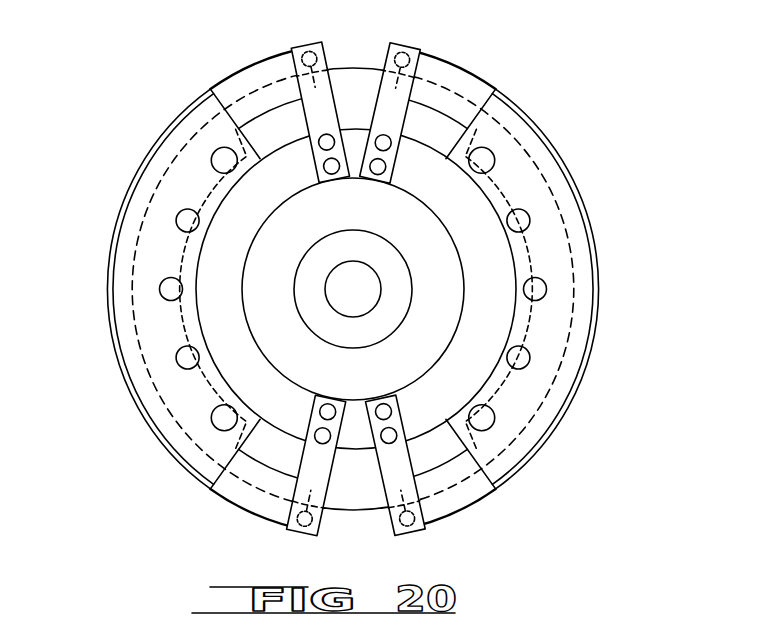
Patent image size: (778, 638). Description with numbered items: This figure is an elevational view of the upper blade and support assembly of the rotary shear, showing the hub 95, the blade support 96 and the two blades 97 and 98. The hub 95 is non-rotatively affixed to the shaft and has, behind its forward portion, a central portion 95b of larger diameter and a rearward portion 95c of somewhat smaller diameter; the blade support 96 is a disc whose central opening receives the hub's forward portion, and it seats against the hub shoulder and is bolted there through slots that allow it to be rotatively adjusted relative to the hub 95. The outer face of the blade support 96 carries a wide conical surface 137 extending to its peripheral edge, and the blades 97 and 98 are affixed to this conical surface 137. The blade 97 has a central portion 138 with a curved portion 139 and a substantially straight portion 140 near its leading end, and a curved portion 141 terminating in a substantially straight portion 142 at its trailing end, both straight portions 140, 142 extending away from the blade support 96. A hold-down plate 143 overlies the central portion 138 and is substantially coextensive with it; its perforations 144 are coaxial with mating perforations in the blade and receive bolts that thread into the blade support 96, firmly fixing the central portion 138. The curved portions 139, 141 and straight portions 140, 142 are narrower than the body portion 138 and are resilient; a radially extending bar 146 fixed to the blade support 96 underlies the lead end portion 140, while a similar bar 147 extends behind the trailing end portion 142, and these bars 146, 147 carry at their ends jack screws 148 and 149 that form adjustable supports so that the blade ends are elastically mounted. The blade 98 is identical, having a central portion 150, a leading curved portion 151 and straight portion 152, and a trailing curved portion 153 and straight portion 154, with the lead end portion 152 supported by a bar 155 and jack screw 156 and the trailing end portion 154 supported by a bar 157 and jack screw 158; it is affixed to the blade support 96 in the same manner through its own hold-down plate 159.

The hub 95 is at (438, 241).
The central portion of hub 95b is at (458, 318).
The rearward portion of hub 95c is at (406, 291).
The blade support 96 is at (222, 260).
The blade 97 is at (600, 221).
The blade 98 is at (108, 318).
The conical surface 137 is at (370, 78).
The central portion of blade 138 is at (586, 166).
The curved portion 139 is at (480, 487).
The substantially straight portion 140 is at (443, 508).
The curved portion 141 is at (485, 90).
The substantially straight portion 142 is at (445, 68).
The hold-down plate 143 is at (588, 328).
The perforations 144 is at (498, 152).
The radially extending bar 146 is at (404, 456).
The radially extending bar 147 is at (402, 129).
The jack screw 148 is at (406, 527).
The jack screw 149 is at (410, 52).
The central portion of blade 150 is at (143, 163).
The curved portion 151 is at (228, 87).
The substantially straight portion 152 is at (271, 53).
The curved portion 153 is at (225, 496).
The substantially straight portion 154 is at (252, 510).
The bar 155 is at (306, 124).
The jack screw 156 is at (323, 44).
The bar 157 is at (330, 468).
The jack screw 158 is at (301, 527).
The hold-down plate 159 is at (183, 133).